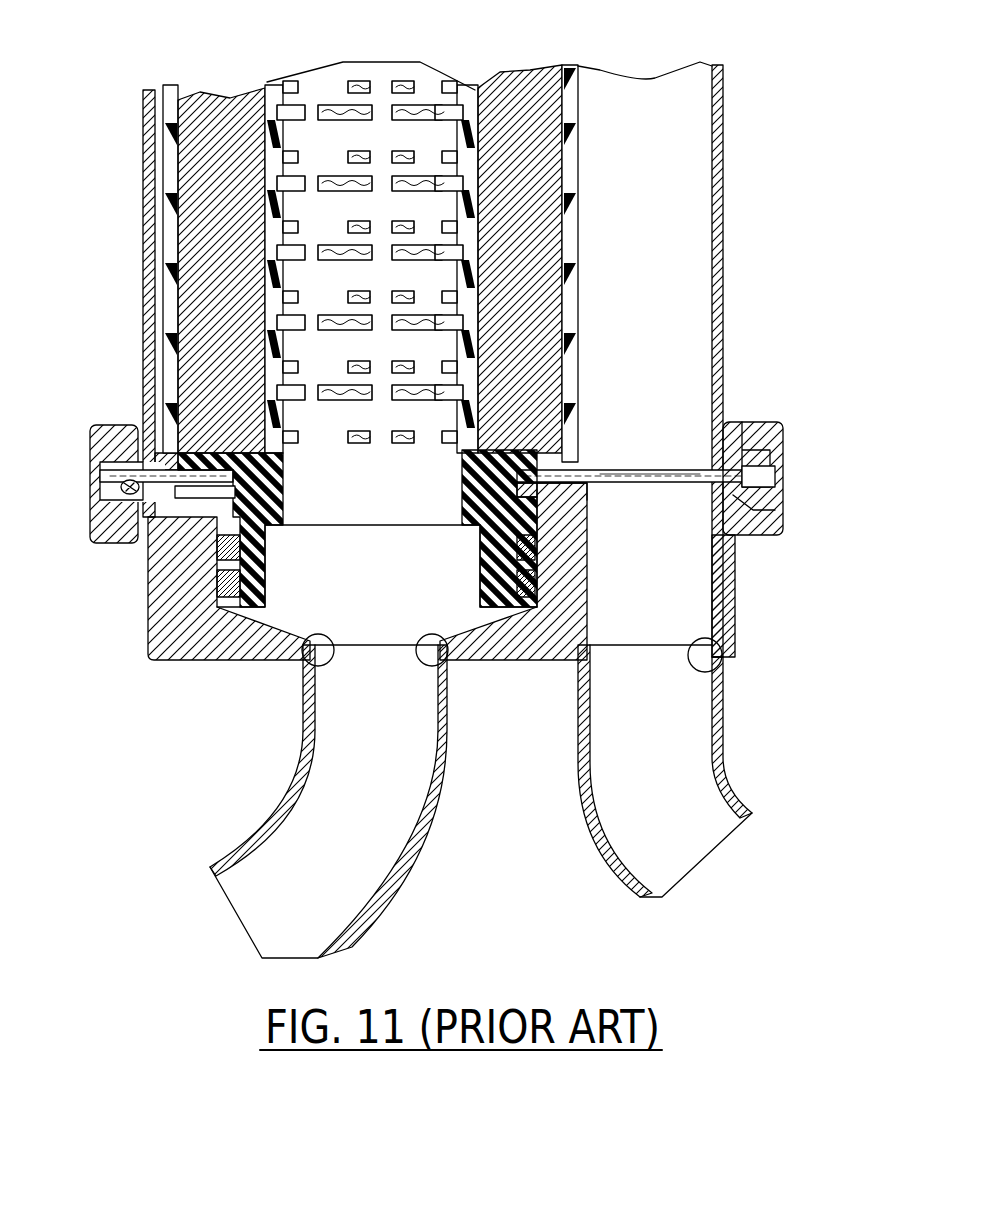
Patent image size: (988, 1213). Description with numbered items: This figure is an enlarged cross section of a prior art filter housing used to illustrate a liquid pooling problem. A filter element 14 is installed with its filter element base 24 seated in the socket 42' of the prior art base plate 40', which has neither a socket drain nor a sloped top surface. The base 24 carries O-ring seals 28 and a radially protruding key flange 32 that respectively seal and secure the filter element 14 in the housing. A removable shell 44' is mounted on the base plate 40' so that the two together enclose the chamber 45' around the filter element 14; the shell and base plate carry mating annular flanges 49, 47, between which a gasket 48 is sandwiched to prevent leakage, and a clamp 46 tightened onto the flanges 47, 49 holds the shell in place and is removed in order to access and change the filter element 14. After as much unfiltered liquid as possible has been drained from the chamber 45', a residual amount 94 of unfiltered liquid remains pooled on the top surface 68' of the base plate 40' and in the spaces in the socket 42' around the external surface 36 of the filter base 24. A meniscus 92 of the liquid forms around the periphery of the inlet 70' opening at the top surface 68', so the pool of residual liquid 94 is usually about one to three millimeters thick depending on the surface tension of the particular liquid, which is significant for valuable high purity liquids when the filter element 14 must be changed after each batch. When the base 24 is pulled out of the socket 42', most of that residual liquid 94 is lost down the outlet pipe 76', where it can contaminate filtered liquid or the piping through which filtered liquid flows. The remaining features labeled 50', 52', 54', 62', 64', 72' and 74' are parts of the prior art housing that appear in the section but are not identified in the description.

The filter element 14 is at (397, 52).
The shell 44' is at (752, 361).
The chamber 45' is at (627, 270).
The external surface 36 is at (583, 380).
The top surface 68' is at (677, 391).
The meniscus 92 is at (650, 468).
The residual liquid 94 is at (168, 472).
The gasket 48 is at (785, 432).
The clamp 46 is at (785, 460).
The annular flange 49 is at (778, 482).
The annular flange 47 is at (778, 498).
The left sleeve 62' is at (266, 530).
The right sleeve 64' is at (472, 528).
The tab 54' is at (599, 503).
The key flange 32 is at (573, 515).
The left flange 52' is at (99, 484).
The O-ring seals 28 is at (215, 582).
The filter element base 24 is at (548, 556).
The base plate 40' is at (326, 571).
The cavity 50' is at (377, 579).
The left tube wall 74' is at (272, 755).
The socket 42' is at (419, 796).
The inlet 70' is at (695, 767).
The right tube 72' is at (726, 777).
The outlet pipe 76' is at (264, 859).